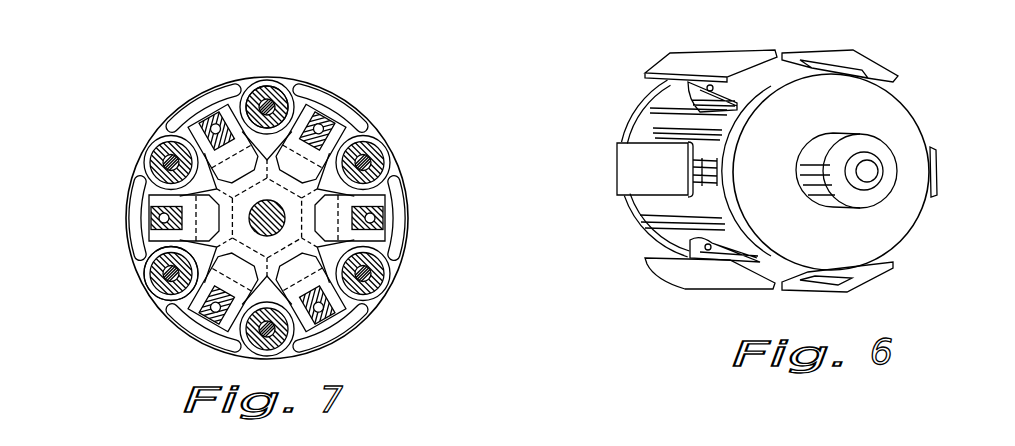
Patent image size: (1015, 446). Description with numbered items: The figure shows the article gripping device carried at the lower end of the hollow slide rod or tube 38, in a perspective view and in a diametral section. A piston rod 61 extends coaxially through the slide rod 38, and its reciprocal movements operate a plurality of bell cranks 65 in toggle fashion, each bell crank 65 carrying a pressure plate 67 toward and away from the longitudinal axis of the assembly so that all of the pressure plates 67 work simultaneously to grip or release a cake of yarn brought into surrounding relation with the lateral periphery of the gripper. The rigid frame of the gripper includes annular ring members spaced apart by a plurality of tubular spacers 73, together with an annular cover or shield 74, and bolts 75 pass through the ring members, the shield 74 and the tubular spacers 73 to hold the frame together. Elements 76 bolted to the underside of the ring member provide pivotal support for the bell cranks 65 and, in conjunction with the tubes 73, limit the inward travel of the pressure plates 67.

In FIG. 6, the slide rod 38 is at (865, 205).
In FIG. 7, the piston rod 61 is at (283, 211).
In FIG. 6, the piston rod 61 is at (870, 180).
In FIG. 7, the bell crank 65 is at (387, 285).
In FIG. 6, the bell crank 65 is at (737, 95).
In FIG. 7, the pressure plate 67 is at (137, 195).
In FIG. 6, the pressure plate 67 is at (800, 47).
In FIG. 7, the tubular spacer 73 is at (264, 98).
In FIG. 6, the tubular spacer 73 is at (662, 120).
In FIG. 6, the annular cover or shield 74 is at (892, 118).
In FIG. 7, the bolt 75 is at (272, 97).
In FIG. 7, the pivotal support element 76 is at (148, 283).